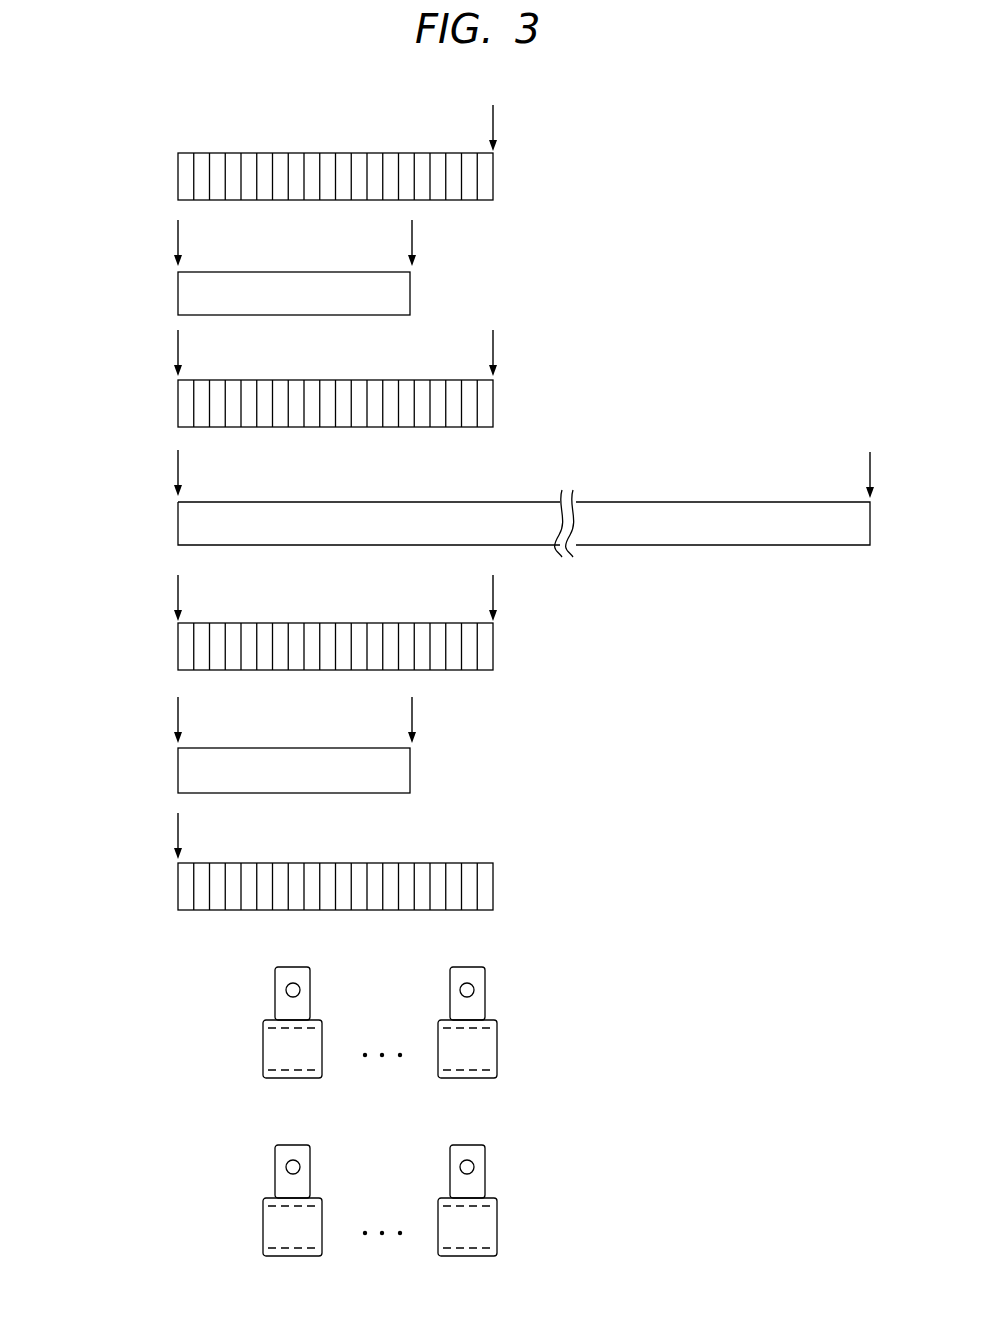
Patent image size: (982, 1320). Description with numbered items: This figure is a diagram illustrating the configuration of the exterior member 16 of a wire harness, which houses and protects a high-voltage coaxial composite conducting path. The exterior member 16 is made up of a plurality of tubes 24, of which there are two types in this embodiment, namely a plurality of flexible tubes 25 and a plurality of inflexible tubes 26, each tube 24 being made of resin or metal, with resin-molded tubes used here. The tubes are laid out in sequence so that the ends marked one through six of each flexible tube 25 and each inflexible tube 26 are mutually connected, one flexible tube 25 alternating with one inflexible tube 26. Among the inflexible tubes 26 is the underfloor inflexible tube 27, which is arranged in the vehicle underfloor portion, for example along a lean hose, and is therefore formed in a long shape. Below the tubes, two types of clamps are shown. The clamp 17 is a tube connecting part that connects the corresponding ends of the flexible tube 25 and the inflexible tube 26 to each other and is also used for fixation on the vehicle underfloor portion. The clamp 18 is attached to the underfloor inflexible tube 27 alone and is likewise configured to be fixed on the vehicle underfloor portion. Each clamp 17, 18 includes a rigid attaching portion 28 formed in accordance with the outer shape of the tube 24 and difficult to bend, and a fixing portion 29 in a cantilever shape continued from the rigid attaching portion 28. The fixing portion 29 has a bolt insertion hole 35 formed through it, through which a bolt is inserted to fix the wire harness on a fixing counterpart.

The exterior member 16 is at (148, 1250).
The clamp 17 is at (263, 1035).
The clamp 18 is at (263, 1212).
The tube 24 is at (793, 715).
The flexible tube 25 is at (348, 153).
The inflexible tube 26 is at (524, 504).
The underfloor inflexible tube 27 is at (368, 502).
The rigid attaching portion 28 is at (268, 1058).
The fixing portion 29 is at (275, 972).
The bolt insertion hole 35 is at (300, 990).